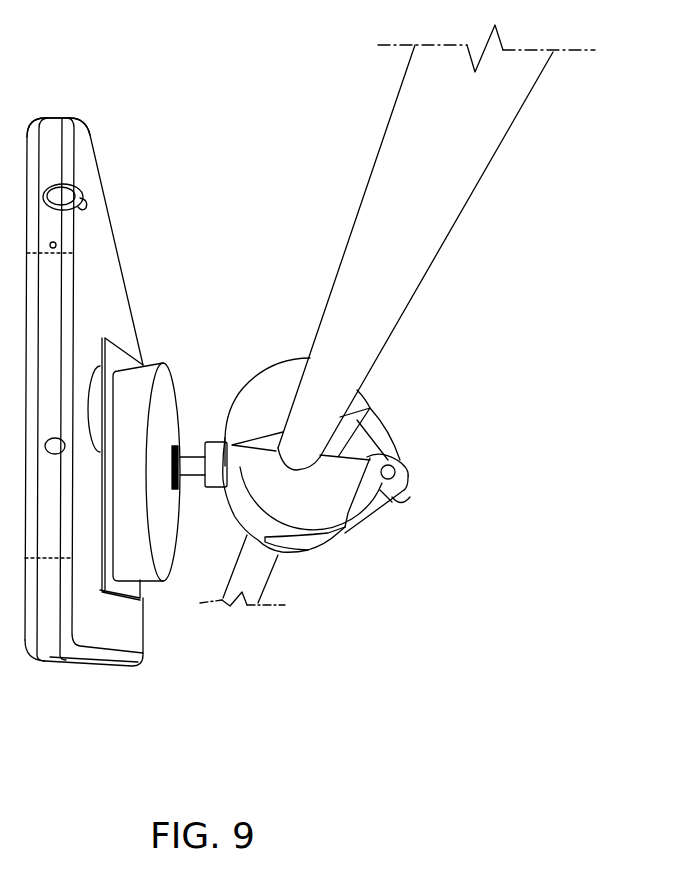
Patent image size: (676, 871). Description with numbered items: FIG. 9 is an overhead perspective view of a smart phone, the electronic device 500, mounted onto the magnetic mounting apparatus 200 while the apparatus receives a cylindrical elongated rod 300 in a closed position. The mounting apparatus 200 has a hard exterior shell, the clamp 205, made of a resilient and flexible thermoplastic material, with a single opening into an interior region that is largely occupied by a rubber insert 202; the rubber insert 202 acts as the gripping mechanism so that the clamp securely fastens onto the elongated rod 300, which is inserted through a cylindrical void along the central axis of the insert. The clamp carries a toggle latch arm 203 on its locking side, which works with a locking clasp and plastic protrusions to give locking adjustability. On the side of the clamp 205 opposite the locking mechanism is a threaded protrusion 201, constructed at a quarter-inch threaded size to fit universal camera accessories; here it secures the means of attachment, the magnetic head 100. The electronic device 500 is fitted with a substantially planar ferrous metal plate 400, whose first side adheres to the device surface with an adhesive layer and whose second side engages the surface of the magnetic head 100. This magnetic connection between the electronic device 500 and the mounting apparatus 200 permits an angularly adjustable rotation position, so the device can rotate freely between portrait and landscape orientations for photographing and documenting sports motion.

The magnetic head 100 is at (166, 618).
The magnetic mounting apparatus 200 is at (374, 630).
The threaded protrusion 201 is at (193, 446).
The rubber insert 202 is at (363, 398).
The toggle latch arm 203 is at (387, 438).
The clamp 205 is at (407, 497).
The elongated rod 300 is at (440, 193).
The ferrous metal plate 400 is at (143, 365).
The electronic device 500 is at (103, 120).